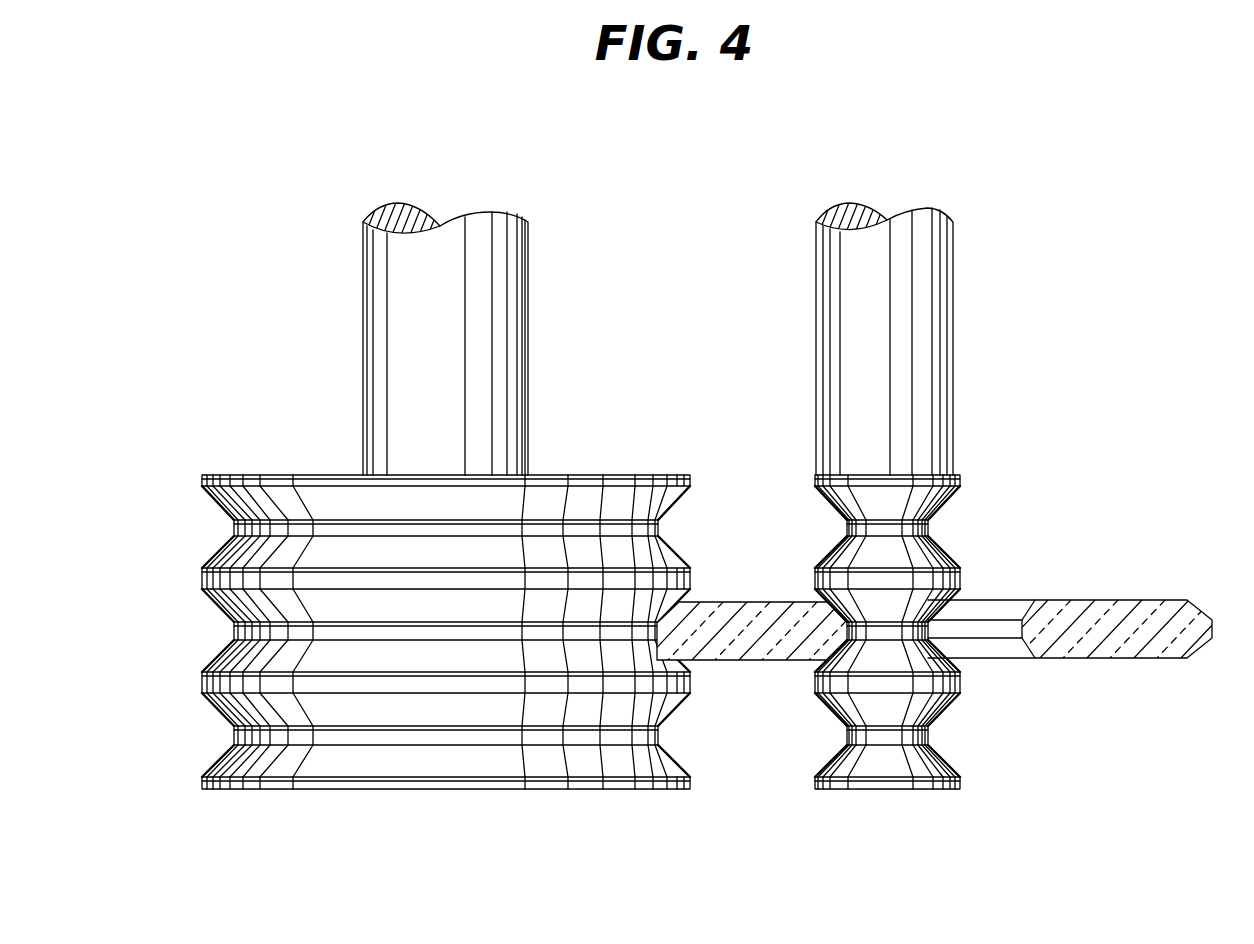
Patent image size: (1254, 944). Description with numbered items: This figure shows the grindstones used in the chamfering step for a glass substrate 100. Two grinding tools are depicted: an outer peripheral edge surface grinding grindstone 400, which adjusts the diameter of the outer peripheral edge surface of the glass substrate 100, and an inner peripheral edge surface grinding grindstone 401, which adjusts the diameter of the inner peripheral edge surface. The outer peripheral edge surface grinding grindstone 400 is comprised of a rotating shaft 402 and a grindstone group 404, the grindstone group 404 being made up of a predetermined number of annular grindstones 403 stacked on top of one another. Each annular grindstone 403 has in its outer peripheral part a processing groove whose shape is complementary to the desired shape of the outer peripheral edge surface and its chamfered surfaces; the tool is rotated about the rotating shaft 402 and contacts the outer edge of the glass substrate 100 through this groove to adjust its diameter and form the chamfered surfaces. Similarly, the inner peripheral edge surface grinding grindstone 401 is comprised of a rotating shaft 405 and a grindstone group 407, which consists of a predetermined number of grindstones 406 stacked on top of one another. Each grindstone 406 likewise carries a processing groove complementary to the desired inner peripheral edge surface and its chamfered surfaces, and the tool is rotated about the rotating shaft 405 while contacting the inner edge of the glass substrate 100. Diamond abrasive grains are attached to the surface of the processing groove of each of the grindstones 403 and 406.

The glass substrate 100 is at (1117, 596).
The outer peripheral edge surface grinding grindstone 400 is at (572, 252).
The inner peripheral edge surface grinding grindstone 401 is at (998, 250).
The rotating shaft 402 is at (528, 327).
The annular grindstone 403 is at (592, 738).
The grindstone group 404 is at (191, 471).
The rotating shaft 405 is at (953, 325).
The grindstone 406 is at (876, 738).
The grindstone group 407 is at (974, 471).